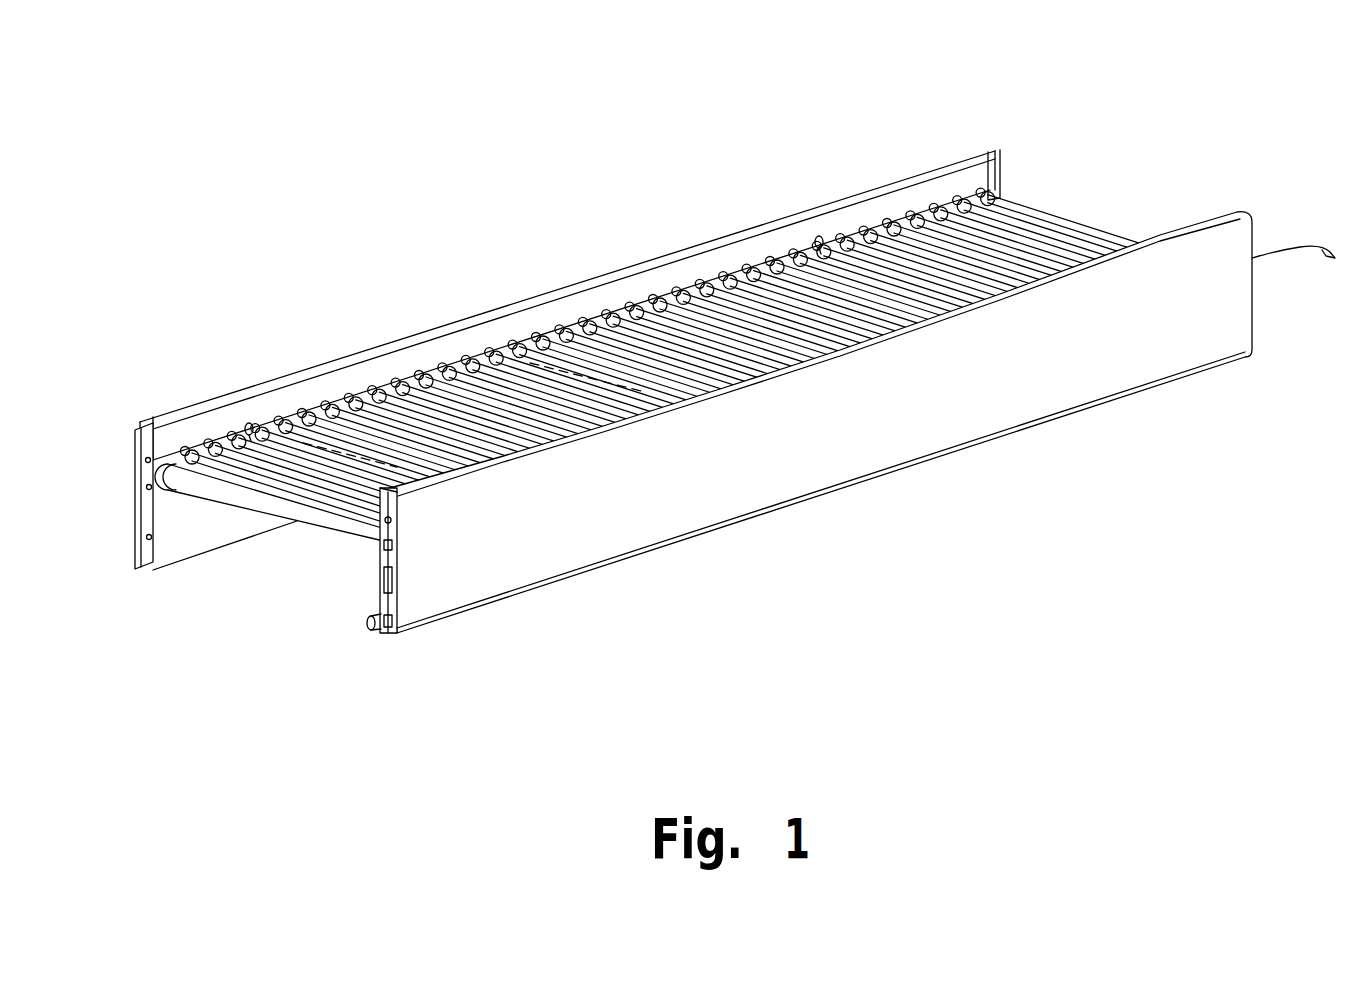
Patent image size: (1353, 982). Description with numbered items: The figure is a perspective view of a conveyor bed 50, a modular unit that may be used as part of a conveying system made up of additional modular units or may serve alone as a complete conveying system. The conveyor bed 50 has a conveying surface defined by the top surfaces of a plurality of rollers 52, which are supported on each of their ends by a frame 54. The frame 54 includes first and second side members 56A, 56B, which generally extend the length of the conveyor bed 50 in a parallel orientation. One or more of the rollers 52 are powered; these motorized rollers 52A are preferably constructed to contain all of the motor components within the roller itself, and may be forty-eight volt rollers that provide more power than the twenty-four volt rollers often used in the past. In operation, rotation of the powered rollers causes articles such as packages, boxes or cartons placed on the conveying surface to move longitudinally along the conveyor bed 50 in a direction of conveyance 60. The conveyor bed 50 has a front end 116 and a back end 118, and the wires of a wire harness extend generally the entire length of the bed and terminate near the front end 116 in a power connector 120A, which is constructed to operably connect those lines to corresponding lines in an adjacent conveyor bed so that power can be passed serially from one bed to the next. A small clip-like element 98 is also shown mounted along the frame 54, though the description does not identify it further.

The conveyor bed 50 is at (297, 308).
The rollers 52 is at (1013, 222).
The motorized roller 52A is at (520, 347).
The frame 54 is at (860, 188).
The first side member 56A is at (185, 563).
The second side member 56B is at (577, 574).
The direction of conveyance 60 is at (612, 220).
The clip 98 is at (245, 426).
The front end 116 is at (279, 706).
The back end 118 is at (1280, 356).
The power connector 120A is at (362, 626).